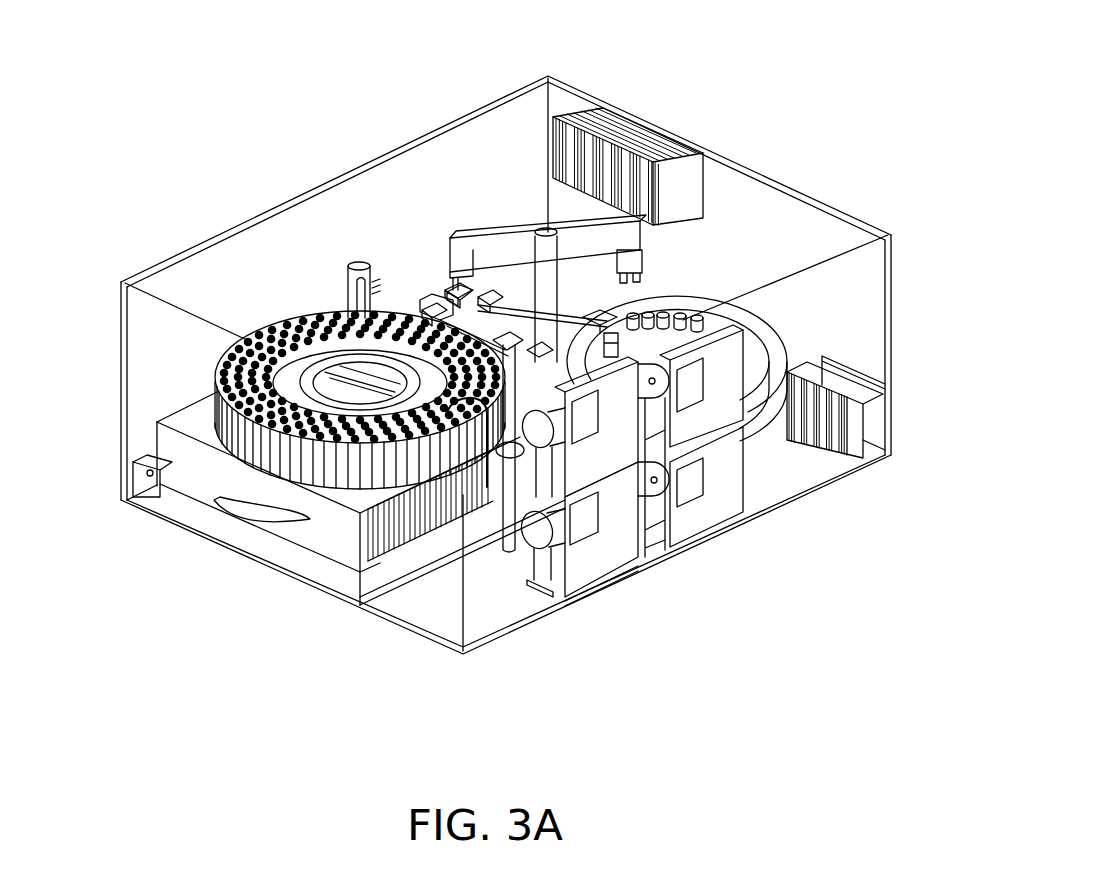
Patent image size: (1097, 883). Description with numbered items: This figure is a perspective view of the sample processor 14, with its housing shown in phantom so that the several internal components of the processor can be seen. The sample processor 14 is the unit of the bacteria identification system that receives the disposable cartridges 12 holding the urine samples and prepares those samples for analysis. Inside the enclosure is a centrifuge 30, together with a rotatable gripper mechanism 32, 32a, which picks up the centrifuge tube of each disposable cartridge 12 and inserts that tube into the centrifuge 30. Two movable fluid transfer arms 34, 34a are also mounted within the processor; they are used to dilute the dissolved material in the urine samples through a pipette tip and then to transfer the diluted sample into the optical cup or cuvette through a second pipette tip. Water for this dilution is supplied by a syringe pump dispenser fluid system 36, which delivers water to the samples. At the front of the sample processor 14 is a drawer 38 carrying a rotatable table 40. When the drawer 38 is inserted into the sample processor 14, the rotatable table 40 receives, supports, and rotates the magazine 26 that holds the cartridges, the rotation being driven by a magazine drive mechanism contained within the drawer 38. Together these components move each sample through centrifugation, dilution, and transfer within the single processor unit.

The disposable cartridge 12 is at (187, 345).
The sample processor 14 is at (773, 85).
The magazine 26 is at (275, 325).
The centrifuge 30 is at (713, 308).
The rotatable gripper mechanism 32 is at (516, 243).
The rotatable gripper mechanism 32a is at (463, 237).
The movable fluid transfer arm 34 is at (445, 306).
The movable fluid transfer arm 34a is at (452, 297).
The syringe pump dispenser fluid system 36 is at (370, 585).
The drawer 38 is at (258, 513).
The rotatable table 40 is at (383, 372).